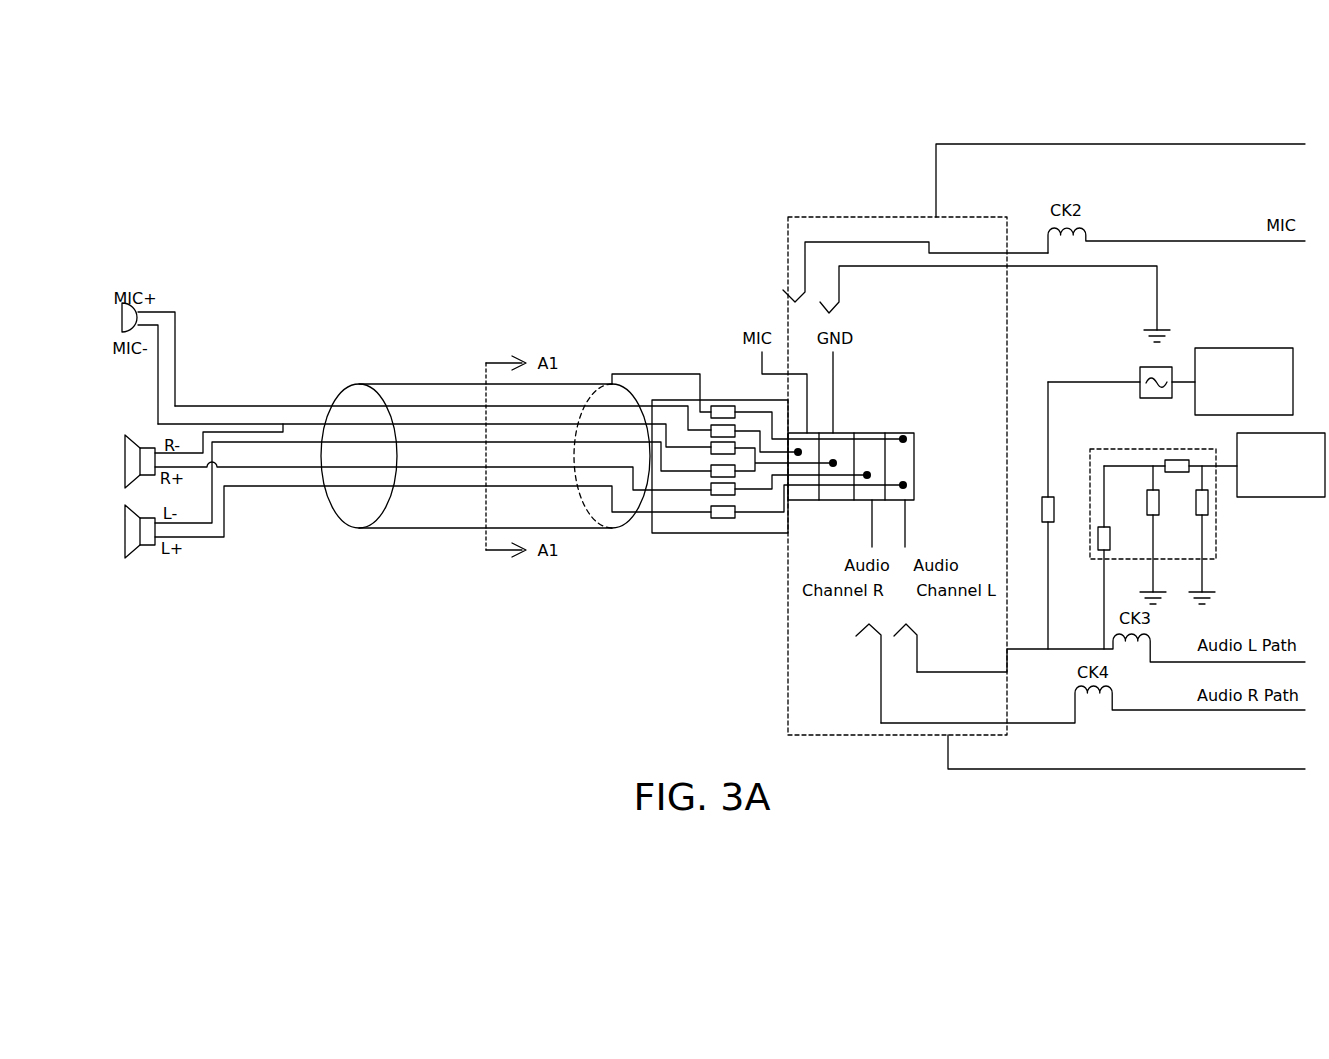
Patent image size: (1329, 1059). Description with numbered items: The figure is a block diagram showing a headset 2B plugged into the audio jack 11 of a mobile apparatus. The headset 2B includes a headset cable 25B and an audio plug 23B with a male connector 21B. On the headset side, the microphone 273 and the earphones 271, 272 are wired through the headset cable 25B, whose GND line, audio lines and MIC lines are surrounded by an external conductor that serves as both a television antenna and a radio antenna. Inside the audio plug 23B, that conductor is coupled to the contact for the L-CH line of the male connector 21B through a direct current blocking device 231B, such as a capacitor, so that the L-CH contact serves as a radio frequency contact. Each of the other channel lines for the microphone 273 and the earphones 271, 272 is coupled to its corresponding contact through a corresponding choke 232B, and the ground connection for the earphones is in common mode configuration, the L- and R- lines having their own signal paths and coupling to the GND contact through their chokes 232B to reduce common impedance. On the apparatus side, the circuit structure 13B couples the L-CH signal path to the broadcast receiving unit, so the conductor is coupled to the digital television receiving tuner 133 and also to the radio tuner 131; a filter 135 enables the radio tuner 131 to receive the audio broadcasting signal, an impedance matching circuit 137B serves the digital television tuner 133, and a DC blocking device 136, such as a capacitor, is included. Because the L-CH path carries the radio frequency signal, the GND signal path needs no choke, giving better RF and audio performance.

The microphone 273 is at (110, 321).
The earphone 272 is at (114, 466).
The earphone 271 is at (114, 533).
The headset 2B is at (434, 460).
The headset cable 25B is at (434, 497).
The audio plug 23B is at (777, 477).
The direct current blocking device 231B is at (722, 405).
The choke 232B is at (743, 496).
The male connector 21B is at (831, 511).
The audio jack 11 is at (1007, 336).
The circuit structure 13B is at (1130, 144).
The filter 135 is at (1140, 374).
The radio tuner 131 is at (1245, 348).
The impedance matching circuit 137B is at (1152, 449).
The DC blocking device 136 is at (1056, 512).
The digital television receiving tuner 133 is at (1288, 498).